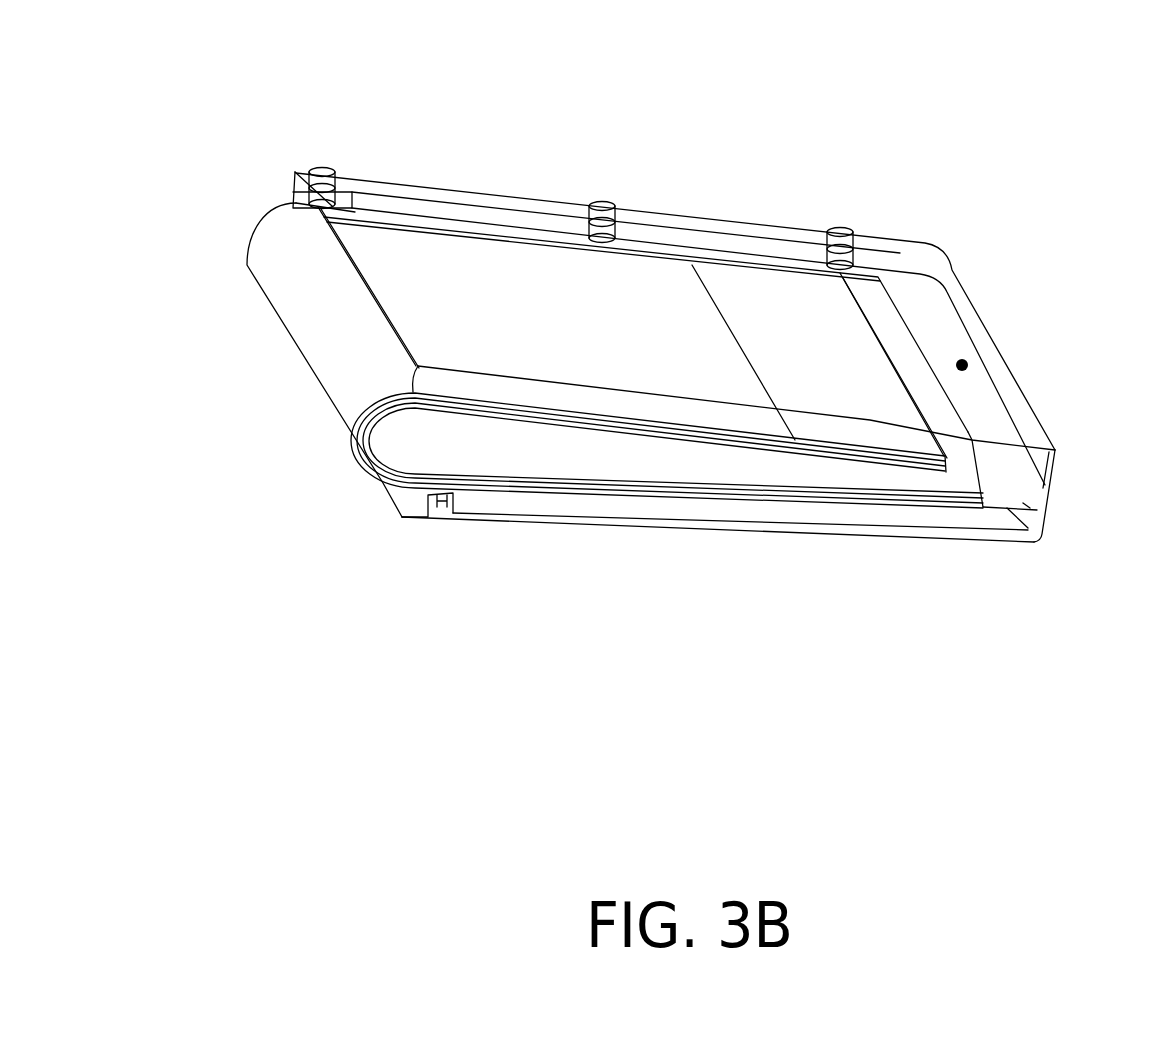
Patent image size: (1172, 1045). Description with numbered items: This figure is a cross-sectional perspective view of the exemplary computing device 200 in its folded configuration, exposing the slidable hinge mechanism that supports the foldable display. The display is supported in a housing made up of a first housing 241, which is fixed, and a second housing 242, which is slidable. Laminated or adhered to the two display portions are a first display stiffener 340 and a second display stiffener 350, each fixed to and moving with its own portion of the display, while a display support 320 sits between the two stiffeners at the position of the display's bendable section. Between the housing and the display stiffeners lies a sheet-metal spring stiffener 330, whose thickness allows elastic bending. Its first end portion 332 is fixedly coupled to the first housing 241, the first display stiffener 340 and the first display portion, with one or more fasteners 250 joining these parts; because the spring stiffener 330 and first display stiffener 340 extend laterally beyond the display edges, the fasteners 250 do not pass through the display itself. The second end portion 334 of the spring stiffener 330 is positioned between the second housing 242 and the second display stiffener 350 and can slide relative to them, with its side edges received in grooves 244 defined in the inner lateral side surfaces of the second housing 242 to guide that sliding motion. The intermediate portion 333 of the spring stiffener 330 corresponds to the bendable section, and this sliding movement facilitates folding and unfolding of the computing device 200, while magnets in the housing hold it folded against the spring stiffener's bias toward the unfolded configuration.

The computing device 200 is at (217, 116).
The grooves 244 is at (512, 210).
The fasteners 250 is at (322, 170).
The second end portion 334 is at (693, 264).
The spring stiffener 330 is at (252, 322).
The intermediate portion 333 is at (352, 428).
The display support 320 is at (357, 463).
The first end portion 332 is at (513, 514).
The first display stiffener 340 is at (570, 492).
The second display stiffener 350 is at (820, 450).
The second housing 242 is at (1062, 468).
The first housing 241 is at (1043, 543).